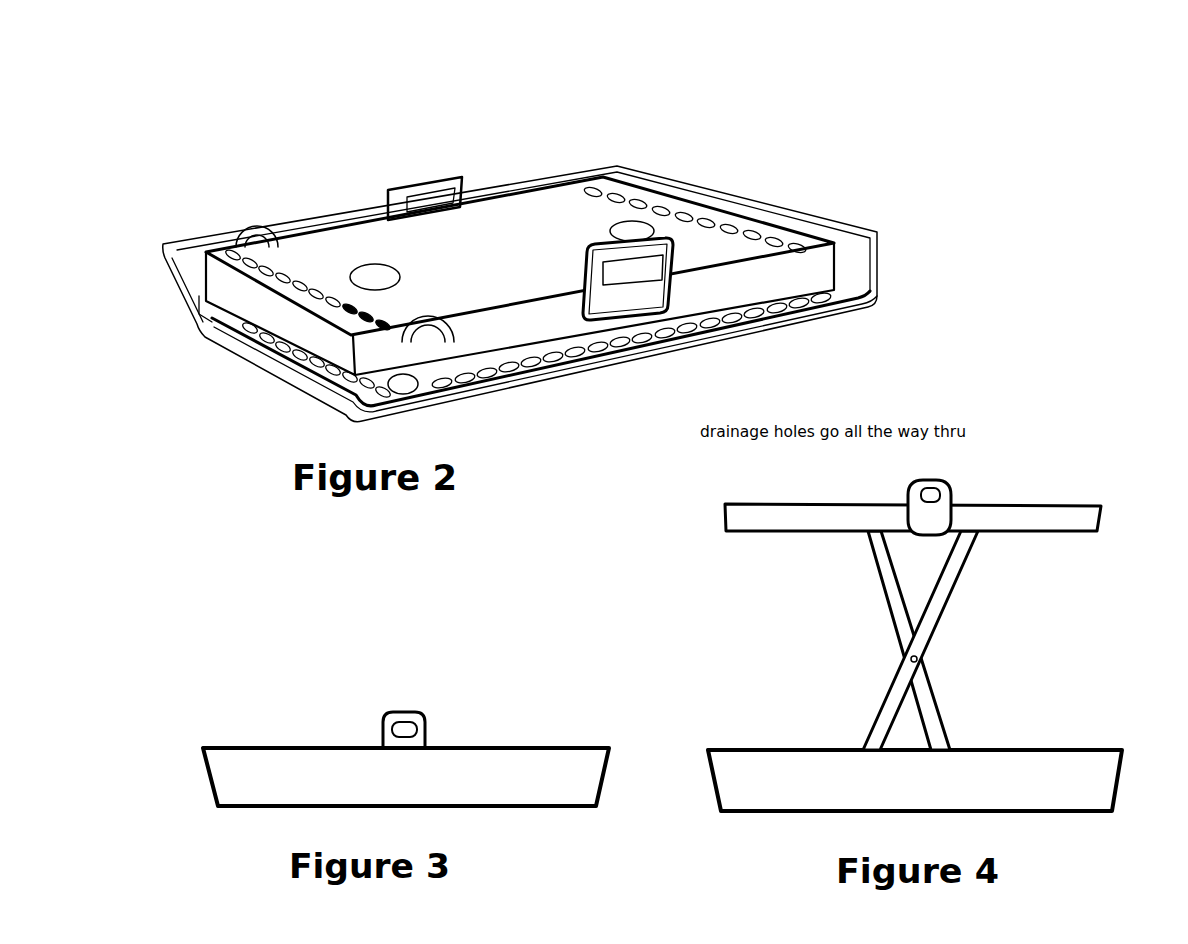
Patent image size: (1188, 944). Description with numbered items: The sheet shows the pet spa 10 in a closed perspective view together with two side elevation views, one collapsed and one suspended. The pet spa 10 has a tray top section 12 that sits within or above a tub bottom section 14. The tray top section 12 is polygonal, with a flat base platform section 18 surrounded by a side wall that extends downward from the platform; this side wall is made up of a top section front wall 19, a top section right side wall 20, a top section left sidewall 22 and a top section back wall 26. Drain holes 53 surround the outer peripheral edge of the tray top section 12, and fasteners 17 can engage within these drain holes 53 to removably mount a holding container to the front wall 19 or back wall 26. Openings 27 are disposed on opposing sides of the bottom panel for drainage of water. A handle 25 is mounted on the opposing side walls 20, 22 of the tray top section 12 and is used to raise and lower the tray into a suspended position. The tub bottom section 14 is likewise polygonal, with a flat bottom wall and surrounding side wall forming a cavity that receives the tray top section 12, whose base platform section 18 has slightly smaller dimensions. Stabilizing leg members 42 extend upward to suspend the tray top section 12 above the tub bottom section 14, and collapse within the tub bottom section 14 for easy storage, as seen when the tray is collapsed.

In FIG. 2, the pet spa 10 is at (505, 158).
In FIG. 3, the pet spa 10 is at (495, 716).
In FIG. 4, the pet spa 10 is at (1050, 481).
In FIG. 4, the tray top section 12 is at (1082, 512).
In FIG. 3, the tub bottom section 14 is at (480, 798).
In FIG. 4, the tub bottom section 14 is at (1063, 801).
In FIG. 2, the fasteners 17 is at (298, 290).
In FIG. 2, the base platform section 18 is at (713, 242).
In FIG. 2, the top section front wall 19 is at (332, 353).
In FIG. 2, the top section right side wall 20 is at (314, 233).
In FIG. 2, the top section left sidewall 22 is at (523, 342).
In FIG. 2, the handle 25 is at (641, 312).
In FIG. 3, the handle 25 is at (382, 745).
In FIG. 4, the handle 25 is at (927, 478).
In FIG. 2, the top section back wall 26 is at (818, 235).
In FIG. 2, the openings 27 is at (368, 276).
In FIG. 4, the stabilizing leg members 42 is at (907, 657).
In FIG. 2, the drain holes 53 is at (818, 258).